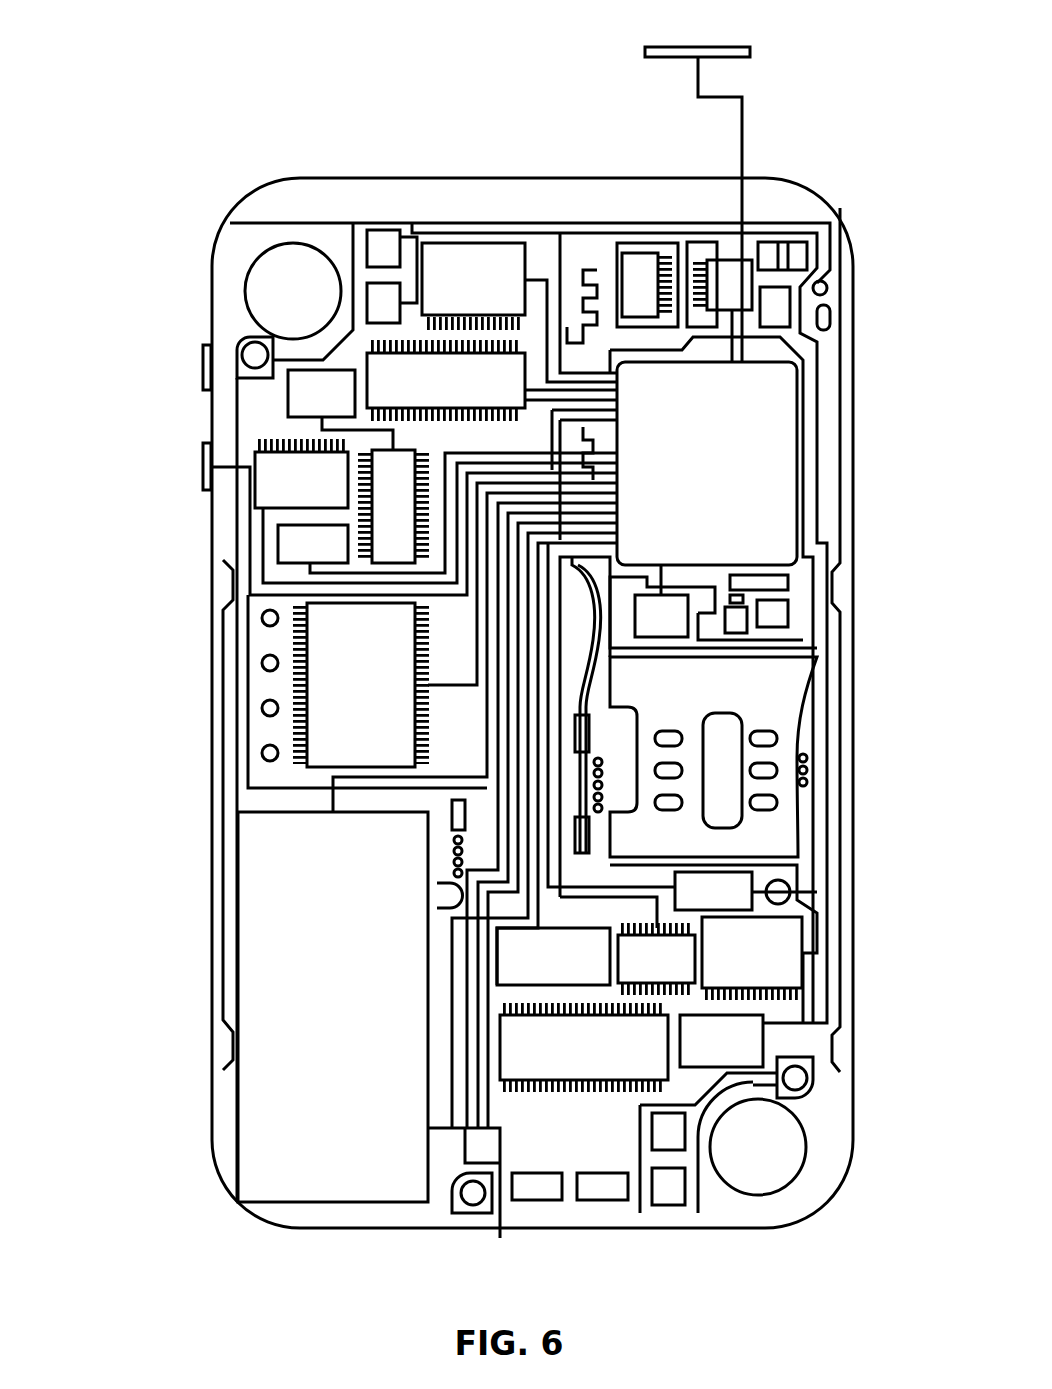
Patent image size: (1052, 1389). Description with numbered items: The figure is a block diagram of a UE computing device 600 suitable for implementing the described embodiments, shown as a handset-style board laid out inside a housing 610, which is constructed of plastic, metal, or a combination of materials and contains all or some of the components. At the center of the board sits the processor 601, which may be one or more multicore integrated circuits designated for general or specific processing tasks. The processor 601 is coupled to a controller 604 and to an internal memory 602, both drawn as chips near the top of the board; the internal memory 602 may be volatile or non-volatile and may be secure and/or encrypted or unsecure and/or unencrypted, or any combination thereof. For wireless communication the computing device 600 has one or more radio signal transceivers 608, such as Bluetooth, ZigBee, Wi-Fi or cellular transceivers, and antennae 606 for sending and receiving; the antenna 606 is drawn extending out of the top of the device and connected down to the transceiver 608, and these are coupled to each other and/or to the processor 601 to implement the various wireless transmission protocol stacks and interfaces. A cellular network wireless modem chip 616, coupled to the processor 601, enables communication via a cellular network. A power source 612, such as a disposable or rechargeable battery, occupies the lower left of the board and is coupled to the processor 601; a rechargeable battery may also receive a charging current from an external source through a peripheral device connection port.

The computing device 600 is at (149, 86).
The processor 601 is at (686, 477).
The internal memory 602 is at (426, 394).
The controller 604 is at (453, 294).
The antennae 606 is at (743, 132).
The radio signal transceivers 608 is at (740, 262).
The housing 610 is at (853, 1072).
The power source 612 is at (312, 1020).
The cellular network wireless modem chip 616 is at (562, 1060).